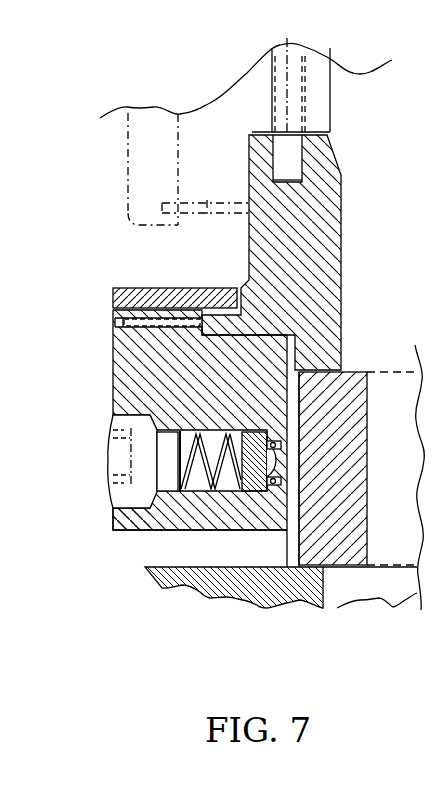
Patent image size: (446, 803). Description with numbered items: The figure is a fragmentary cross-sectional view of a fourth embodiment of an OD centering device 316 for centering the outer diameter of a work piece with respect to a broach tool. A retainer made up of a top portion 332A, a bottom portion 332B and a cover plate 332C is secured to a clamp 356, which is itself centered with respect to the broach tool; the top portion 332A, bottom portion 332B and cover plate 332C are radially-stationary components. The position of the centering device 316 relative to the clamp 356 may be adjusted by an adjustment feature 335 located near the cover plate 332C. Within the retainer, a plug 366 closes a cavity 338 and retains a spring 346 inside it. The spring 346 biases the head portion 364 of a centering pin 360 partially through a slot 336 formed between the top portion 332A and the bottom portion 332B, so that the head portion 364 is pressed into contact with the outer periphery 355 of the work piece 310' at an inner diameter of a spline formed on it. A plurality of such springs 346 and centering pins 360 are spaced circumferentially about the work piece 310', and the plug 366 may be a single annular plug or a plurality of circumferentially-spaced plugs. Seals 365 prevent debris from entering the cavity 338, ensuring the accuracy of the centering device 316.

The clamp 356 is at (322, 238).
The top portion 332A is at (143, 400).
The bottom portion 332B is at (125, 521).
The cover plate 332C is at (185, 300).
The adjustment feature 335 is at (148, 318).
The slot 336 is at (290, 448).
The work piece 310' is at (388, 477).
The outer periphery 355 is at (294, 538).
The plug 366 is at (123, 432).
The spring 346 is at (178, 472).
The cavity 338 is at (211, 487).
The centering pin 360 is at (255, 483).
The seals 365 is at (283, 455).
The head portion 364 is at (282, 478).
The OD centering device 316 is at (138, 540).